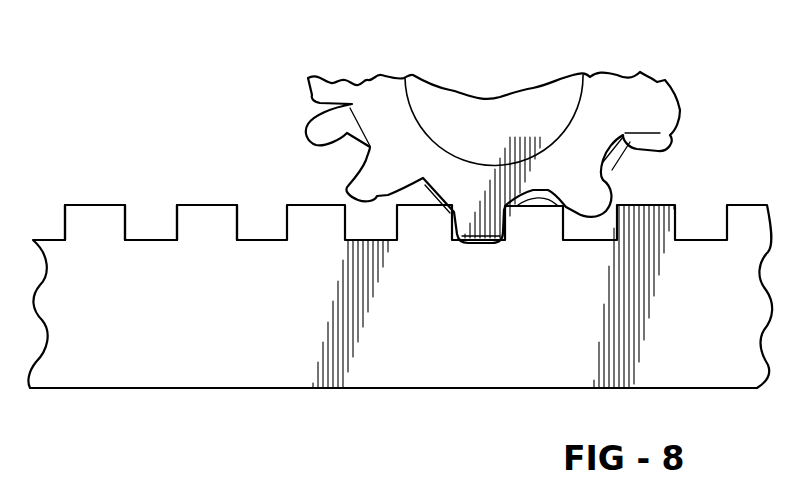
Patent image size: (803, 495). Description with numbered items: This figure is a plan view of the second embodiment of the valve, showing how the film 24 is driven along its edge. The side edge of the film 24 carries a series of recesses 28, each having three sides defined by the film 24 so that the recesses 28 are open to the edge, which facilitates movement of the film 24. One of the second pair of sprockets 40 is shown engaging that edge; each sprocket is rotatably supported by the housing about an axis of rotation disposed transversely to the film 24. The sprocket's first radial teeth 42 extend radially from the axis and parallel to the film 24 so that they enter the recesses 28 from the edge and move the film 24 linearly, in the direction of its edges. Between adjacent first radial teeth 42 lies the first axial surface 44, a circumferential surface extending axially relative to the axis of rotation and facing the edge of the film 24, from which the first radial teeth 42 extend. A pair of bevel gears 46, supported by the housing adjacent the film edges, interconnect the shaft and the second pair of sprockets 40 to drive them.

The film 24 is at (193, 378).
The recesses 28 is at (150, 222).
The second pair of sprockets 40 is at (632, 84).
The first radial teeth 42 is at (670, 103).
The first axial surface 44 is at (566, 207).
The bevel gears 46 is at (303, 127).